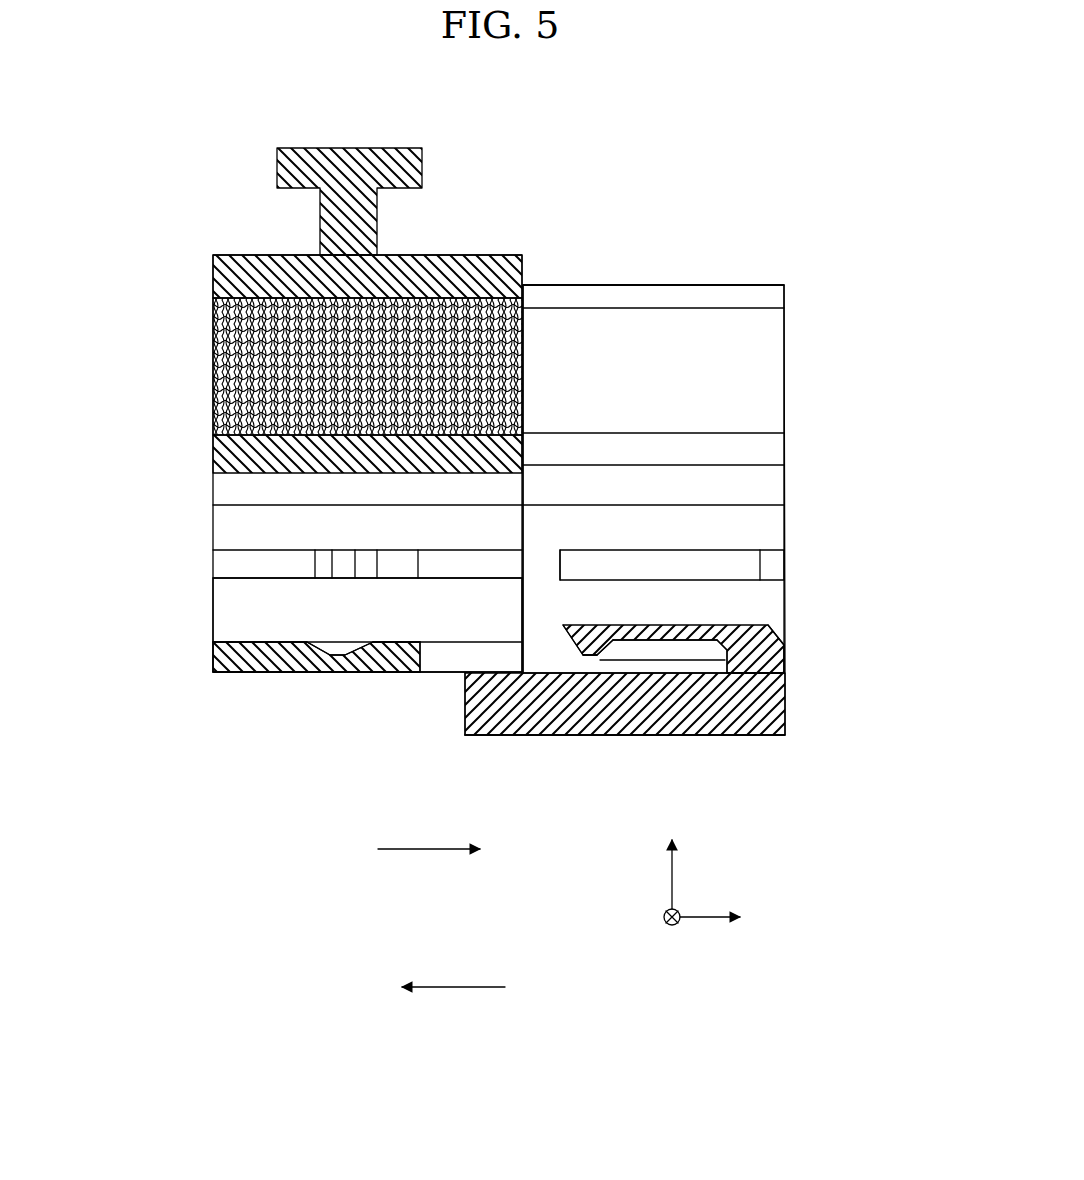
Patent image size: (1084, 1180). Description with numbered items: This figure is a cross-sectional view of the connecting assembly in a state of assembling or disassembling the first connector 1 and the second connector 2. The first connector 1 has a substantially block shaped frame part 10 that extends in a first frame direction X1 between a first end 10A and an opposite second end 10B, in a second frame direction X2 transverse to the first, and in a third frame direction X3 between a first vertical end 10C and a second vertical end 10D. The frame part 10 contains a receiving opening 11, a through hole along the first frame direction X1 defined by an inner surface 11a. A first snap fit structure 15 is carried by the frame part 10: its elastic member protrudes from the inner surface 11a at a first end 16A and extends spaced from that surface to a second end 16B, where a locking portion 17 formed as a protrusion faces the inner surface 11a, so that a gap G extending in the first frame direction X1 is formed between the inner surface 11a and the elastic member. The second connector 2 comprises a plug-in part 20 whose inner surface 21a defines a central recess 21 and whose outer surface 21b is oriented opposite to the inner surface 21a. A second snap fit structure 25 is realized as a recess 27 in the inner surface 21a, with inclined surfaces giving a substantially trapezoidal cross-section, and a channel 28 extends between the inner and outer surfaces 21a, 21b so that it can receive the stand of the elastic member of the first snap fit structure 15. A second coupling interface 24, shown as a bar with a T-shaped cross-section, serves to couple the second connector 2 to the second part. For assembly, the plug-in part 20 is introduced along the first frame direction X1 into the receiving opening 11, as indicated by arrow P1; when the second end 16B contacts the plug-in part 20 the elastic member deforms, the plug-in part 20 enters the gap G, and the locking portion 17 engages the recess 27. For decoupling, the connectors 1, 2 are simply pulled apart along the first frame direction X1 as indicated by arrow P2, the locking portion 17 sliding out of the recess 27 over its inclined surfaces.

The first connector 1 is at (797, 729).
The second connector 2 is at (150, 211).
The frame part 10 is at (632, 736).
The first end 10A is at (464, 712).
The second end 10B is at (784, 365).
The first vertical end 10C is at (683, 285).
The second vertical end 10D is at (702, 736).
The receiving opening 11 is at (768, 493).
The inner surface 11a is at (648, 668).
The first snap fit structure 15 is at (791, 570).
The first end 16A is at (778, 562).
The second end 16B is at (560, 560).
The locking portion 17 is at (595, 660).
The plug-in part 20 is at (212, 280).
The central recess 21 is at (237, 613).
The inner surface 21a is at (260, 640).
The outer surface 21b is at (258, 675).
The second coupling interface 24 is at (334, 132).
The second snap fit structure 25 is at (316, 729).
The recess 27 is at (330, 658).
The channel 28 is at (442, 660).
The gap G is at (624, 664).
The arrow P1 is at (420, 850).
The arrow P2 is at (435, 988).
The first frame direction X1 is at (713, 918).
The second frame direction X2 is at (666, 928).
The third frame direction X3 is at (668, 870).